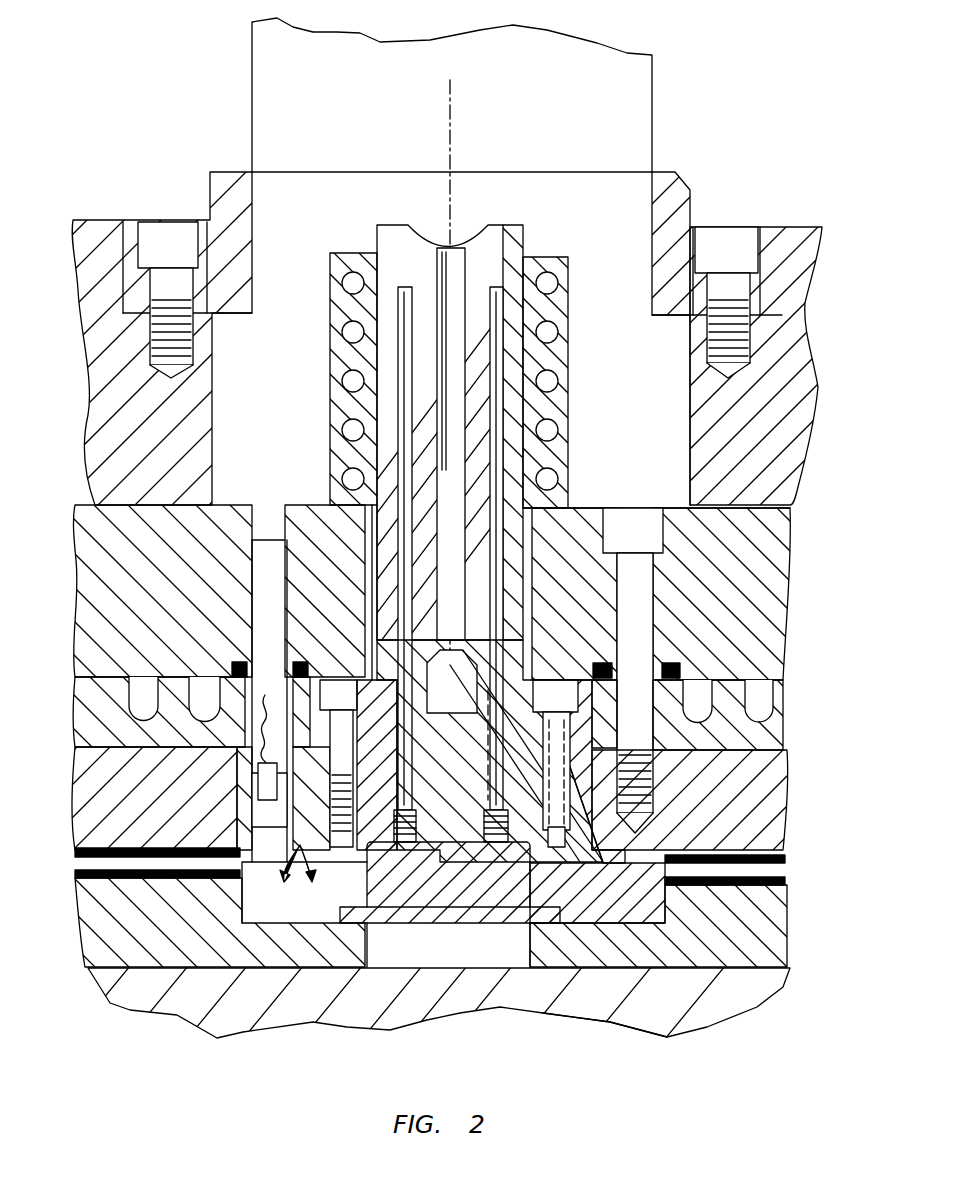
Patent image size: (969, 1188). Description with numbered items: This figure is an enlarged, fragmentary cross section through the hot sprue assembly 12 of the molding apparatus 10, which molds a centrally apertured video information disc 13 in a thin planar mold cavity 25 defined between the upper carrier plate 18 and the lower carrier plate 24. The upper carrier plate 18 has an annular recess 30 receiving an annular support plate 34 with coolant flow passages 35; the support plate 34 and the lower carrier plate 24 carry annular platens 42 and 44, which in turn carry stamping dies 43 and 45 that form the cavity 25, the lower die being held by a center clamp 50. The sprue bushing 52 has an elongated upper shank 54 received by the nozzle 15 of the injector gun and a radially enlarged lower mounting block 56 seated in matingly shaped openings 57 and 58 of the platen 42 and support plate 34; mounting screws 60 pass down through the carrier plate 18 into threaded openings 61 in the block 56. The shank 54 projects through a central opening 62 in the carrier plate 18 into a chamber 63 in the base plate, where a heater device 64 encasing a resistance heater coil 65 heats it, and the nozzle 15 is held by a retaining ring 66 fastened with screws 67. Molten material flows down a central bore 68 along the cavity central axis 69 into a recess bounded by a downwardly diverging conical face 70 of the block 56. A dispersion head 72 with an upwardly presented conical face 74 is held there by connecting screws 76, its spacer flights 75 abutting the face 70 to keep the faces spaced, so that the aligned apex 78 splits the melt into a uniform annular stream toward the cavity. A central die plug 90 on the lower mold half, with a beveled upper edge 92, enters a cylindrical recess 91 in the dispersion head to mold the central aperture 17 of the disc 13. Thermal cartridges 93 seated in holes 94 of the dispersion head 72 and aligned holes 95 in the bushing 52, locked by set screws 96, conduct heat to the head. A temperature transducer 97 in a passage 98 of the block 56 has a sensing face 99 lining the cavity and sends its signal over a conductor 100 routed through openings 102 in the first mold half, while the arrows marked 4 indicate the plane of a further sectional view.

The flow arrows 4 is at (298, 870).
The molding apparatus 10 is at (790, 232).
The hot sprue assembly 12 is at (276, 468).
The video information disc 13 is at (105, 860).
The nozzle 15 is at (652, 107).
The central aperture 17 is at (532, 922).
The carrier plate 18 is at (778, 530).
The carrier plate 24 is at (665, 1035).
The mold cavity 25 is at (140, 882).
The annular plate-shaped recess 30 is at (400, 594).
The annular support plate 34 is at (98, 714).
The flow passages 35 is at (690, 697).
The annular platen 42 is at (775, 770).
The stamping die 43 is at (96, 850).
The annular platen 44 is at (125, 977).
The stamping die 45 is at (770, 890).
The lower clamp 50 is at (248, 905).
The sprue bushing 52 is at (522, 567).
The upper shank 54 is at (484, 594).
The lower mounting block 56 is at (646, 862).
The opening 57 is at (240, 840).
The opening 58 is at (588, 727).
The mounting screws 60 is at (659, 670).
The threaded openings 61 is at (655, 797).
The central opening 62 is at (506, 609).
The chamber 63 is at (676, 420).
The heater device 64 is at (558, 367).
The electrical resistance heater coil 65 is at (558, 284).
The retaining ring 66 is at (678, 190).
The screws 67 is at (735, 247).
The central bore 68 is at (446, 250).
The central axis 69 is at (452, 141).
The conical face 70 is at (508, 734).
The dispersion head 72 is at (385, 860).
The conical face 74 is at (520, 762).
The spacer flights 75 is at (426, 694).
The connecting screws 76 is at (338, 682).
The dispersion head apex 78 is at (462, 787).
The central die plug 90 is at (378, 920).
The cylindrical recess 91 is at (417, 847).
The upper peripheral edge 92 is at (515, 849).
The thermal pins or cartridges 93 is at (382, 528).
The hole 94 is at (408, 747).
The hole 95 is at (350, 360).
The set screws 96 is at (492, 828).
The temperature sensing transducer 97 is at (258, 784).
The passage 98 is at (250, 814).
The sensing face 99 is at (265, 872).
The conductor 100 is at (258, 730).
The openings 102 is at (245, 580).